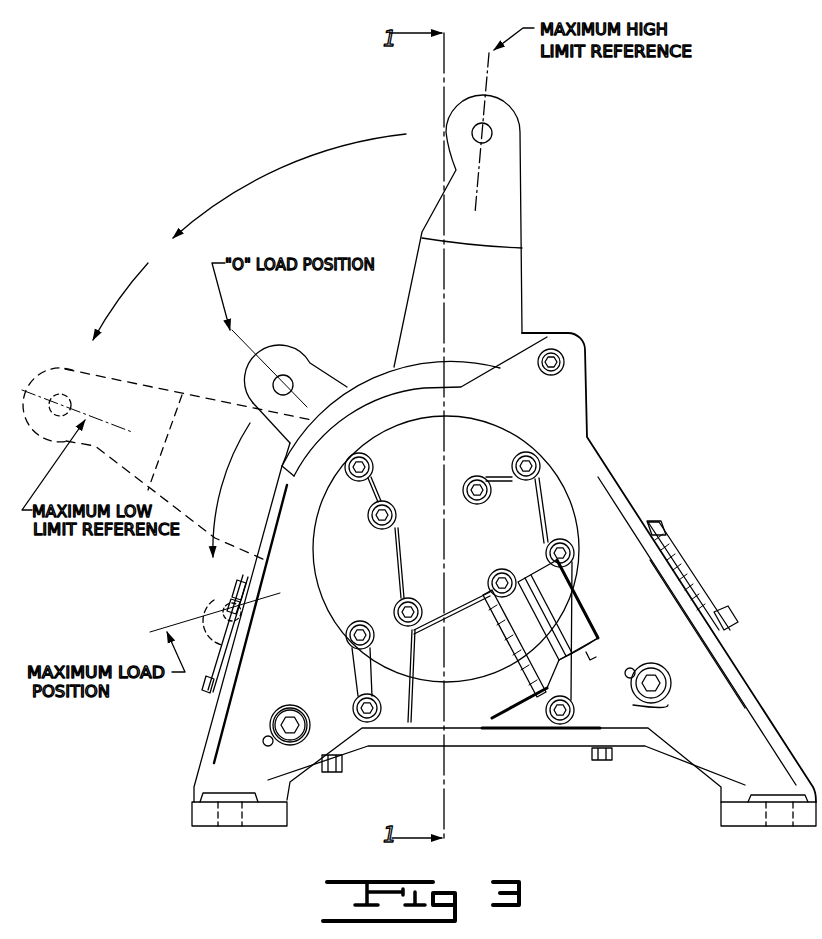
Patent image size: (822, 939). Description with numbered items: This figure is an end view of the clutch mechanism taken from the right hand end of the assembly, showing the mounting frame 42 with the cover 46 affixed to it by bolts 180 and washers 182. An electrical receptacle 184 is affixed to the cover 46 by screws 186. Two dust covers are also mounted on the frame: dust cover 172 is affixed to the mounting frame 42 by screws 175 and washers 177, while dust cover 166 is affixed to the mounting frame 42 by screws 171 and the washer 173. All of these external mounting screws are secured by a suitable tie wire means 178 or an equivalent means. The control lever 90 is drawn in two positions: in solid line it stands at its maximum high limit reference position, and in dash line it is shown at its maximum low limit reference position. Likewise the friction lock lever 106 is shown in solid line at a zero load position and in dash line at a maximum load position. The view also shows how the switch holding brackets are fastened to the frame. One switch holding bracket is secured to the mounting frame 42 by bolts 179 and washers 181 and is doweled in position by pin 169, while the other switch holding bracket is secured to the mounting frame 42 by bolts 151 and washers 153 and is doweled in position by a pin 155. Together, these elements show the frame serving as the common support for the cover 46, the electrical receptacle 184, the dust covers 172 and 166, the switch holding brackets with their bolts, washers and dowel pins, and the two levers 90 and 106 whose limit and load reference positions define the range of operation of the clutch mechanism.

The mounting frame 42 is at (200, 758).
The cover 46 is at (460, 556).
The control lever 90 is at (518, 283).
The friction lock lever 106 is at (307, 368).
The bolts 151 is at (658, 692).
The washers 153 is at (650, 705).
The pin 155 is at (630, 668).
The dust cover 166 is at (745, 663).
The pin 169 is at (262, 741).
The screws 171 is at (732, 622).
The dust cover 172 is at (205, 712).
The washer 173 is at (726, 606).
The screws 175 is at (230, 594).
The washers 177 is at (240, 582).
The tie wire means 178 is at (548, 497).
The bolts 179 is at (292, 716).
The bolts 180 is at (385, 700).
The washers 181 is at (305, 714).
The washers 182 is at (372, 722).
The electrical receptacle 184 is at (575, 607).
The screws 186 is at (592, 633).